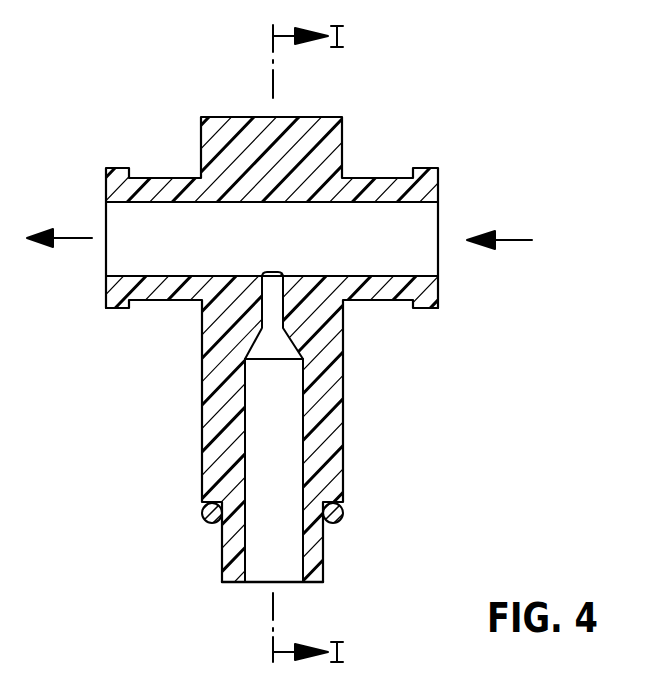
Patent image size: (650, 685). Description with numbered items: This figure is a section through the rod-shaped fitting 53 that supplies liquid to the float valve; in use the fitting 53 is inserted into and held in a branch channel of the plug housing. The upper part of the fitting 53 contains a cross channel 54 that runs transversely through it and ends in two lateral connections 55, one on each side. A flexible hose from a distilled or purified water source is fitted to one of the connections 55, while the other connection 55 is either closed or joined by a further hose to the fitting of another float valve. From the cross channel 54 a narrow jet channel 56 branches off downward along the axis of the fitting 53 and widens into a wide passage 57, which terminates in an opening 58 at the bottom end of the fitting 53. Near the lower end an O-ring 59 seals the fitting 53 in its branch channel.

The rod-shaped fitting 53 is at (325, 317).
The channel 54 is at (400, 228).
The lateral connections 55 is at (158, 178).
The jet channel 56 is at (273, 307).
The wide passage 57 is at (280, 435).
The opening 58 is at (289, 583).
The O-ring 59 is at (343, 510).